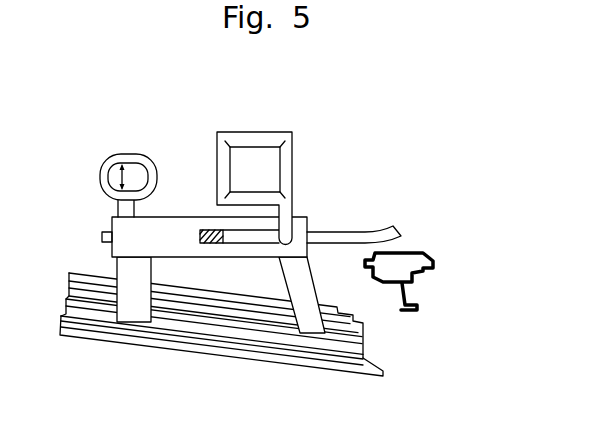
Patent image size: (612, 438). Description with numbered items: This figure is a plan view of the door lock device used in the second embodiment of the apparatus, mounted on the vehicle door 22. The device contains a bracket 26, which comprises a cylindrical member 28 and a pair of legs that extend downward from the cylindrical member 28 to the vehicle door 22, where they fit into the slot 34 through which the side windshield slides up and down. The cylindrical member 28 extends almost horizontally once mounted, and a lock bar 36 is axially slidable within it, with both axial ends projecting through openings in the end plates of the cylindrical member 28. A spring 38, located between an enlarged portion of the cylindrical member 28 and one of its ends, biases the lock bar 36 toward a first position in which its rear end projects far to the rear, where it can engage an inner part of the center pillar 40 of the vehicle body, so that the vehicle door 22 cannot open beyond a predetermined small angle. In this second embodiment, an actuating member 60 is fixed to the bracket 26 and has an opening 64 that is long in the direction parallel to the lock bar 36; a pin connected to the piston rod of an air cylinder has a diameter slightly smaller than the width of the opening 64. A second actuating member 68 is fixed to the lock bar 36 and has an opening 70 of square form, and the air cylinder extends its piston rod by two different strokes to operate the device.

The vehicle door 22 is at (80, 271).
The bracket 26 is at (187, 208).
The cylindrical member 28 is at (185, 243).
The slot 34 is at (103, 311).
The lock bar 36 is at (343, 234).
The spring 38 is at (217, 248).
The center pillar 40 is at (410, 252).
The actuating member 60 is at (125, 156).
The opening 64 is at (108, 173).
The actuating member 68 is at (287, 167).
The opening 70 is at (257, 157).